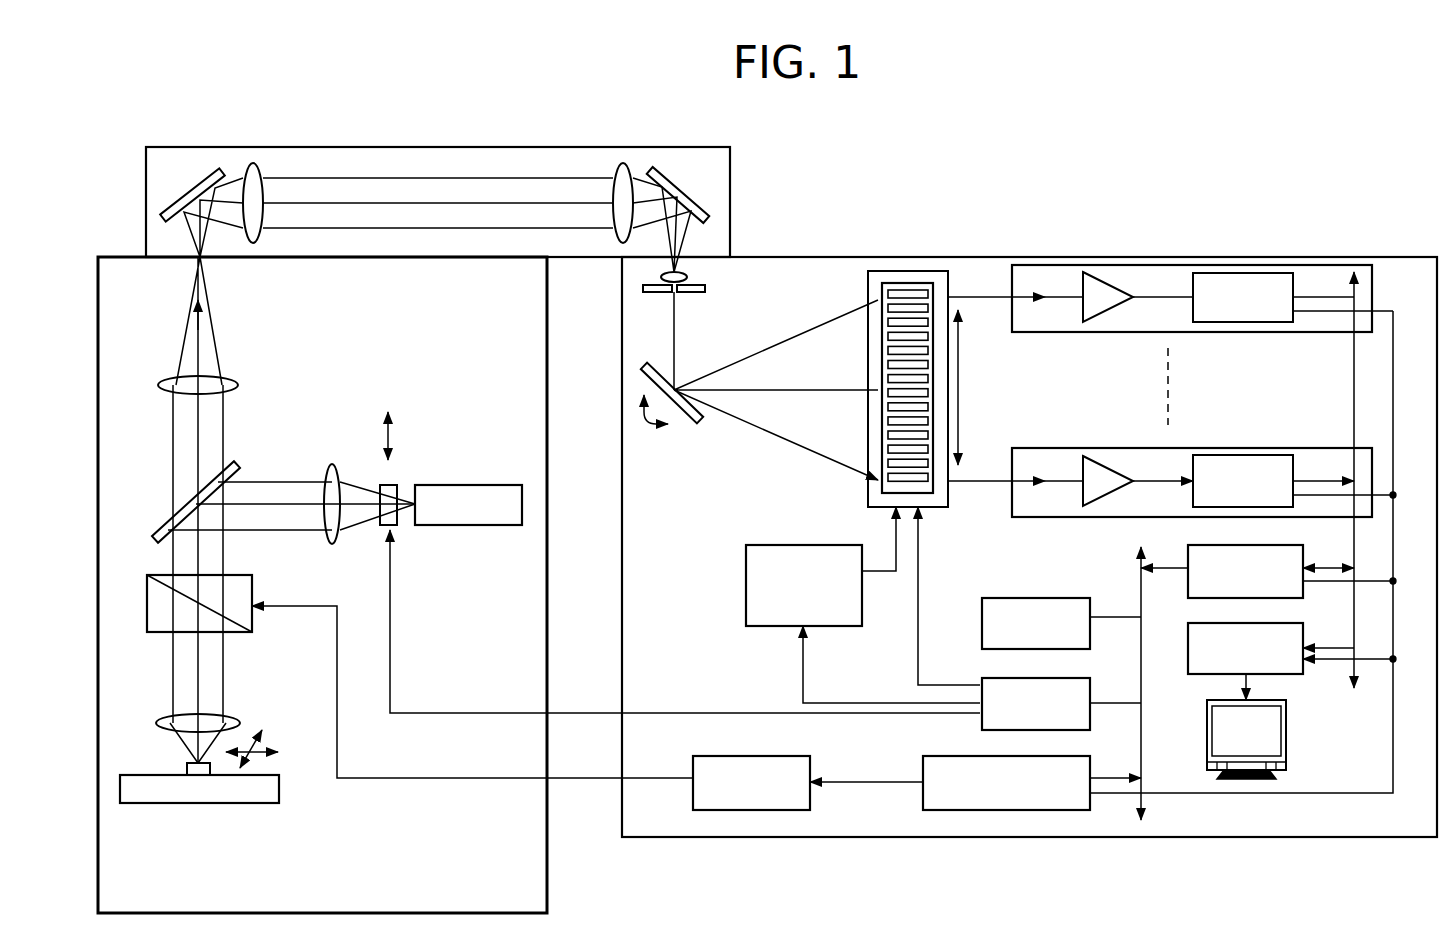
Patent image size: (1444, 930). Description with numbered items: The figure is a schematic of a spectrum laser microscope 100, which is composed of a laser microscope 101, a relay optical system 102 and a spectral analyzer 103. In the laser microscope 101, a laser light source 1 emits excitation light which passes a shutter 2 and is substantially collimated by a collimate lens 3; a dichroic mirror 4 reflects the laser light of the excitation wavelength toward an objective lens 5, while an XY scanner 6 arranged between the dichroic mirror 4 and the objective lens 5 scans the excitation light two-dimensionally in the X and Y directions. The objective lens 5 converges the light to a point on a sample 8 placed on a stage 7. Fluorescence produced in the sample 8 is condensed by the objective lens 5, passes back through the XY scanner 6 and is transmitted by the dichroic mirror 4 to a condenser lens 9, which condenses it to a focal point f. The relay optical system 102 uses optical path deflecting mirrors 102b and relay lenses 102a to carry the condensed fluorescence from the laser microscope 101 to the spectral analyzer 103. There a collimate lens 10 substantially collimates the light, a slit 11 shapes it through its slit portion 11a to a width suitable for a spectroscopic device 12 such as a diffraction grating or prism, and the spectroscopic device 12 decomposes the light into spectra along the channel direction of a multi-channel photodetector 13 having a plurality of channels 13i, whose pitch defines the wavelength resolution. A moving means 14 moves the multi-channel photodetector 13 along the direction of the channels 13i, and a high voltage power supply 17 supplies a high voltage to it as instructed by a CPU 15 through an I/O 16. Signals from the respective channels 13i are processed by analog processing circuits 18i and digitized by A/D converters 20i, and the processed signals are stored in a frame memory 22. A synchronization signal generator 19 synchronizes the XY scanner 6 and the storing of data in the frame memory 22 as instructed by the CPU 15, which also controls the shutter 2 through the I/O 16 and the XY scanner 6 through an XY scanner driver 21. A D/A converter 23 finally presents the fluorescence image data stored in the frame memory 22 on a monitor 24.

The laser light source 1 is at (490, 485).
The shutter 2 is at (397, 485).
The collimate lens 3 is at (335, 465).
The dichroic mirror 4 is at (240, 470).
The objective lens 5 is at (232, 715).
The XY scanner 6 is at (245, 617).
The stage 7 is at (268, 802).
The sample 8 is at (187, 768).
The condenser lens 9 is at (238, 380).
The collimate lens 10 is at (690, 278).
The slit 11 is at (700, 293).
The slit portion 11a is at (668, 292).
The spectroscopic device 12 is at (695, 425).
The multi-channel photodetector 13 is at (915, 290).
The channel 13i is at (898, 300).
The moving means 14 is at (942, 275).
The CPU 15 is at (1075, 598).
The I/O 16 is at (1075, 678).
The high voltage power supply 17 is at (810, 545).
The analog processing circuit 18i is at (1105, 322).
The synchronization signal generator 19 is at (1055, 812).
The A/D converter 20i is at (1272, 322).
The XY scanner driver 21 is at (818, 756).
The frame memory 22 is at (1290, 545).
The D/A converter 23 is at (1295, 623).
The monitor 24 is at (1290, 722).
The spectrum laser microscope 100 is at (790, 180).
The laser microscope 101 is at (548, 880).
The relay optical system 102 is at (715, 163).
The relay lens 102a is at (256, 172).
The optical path deflecting mirror 102b is at (200, 178).
The spectral analyzer 103 is at (848, 812).
The focal point f is at (206, 262).